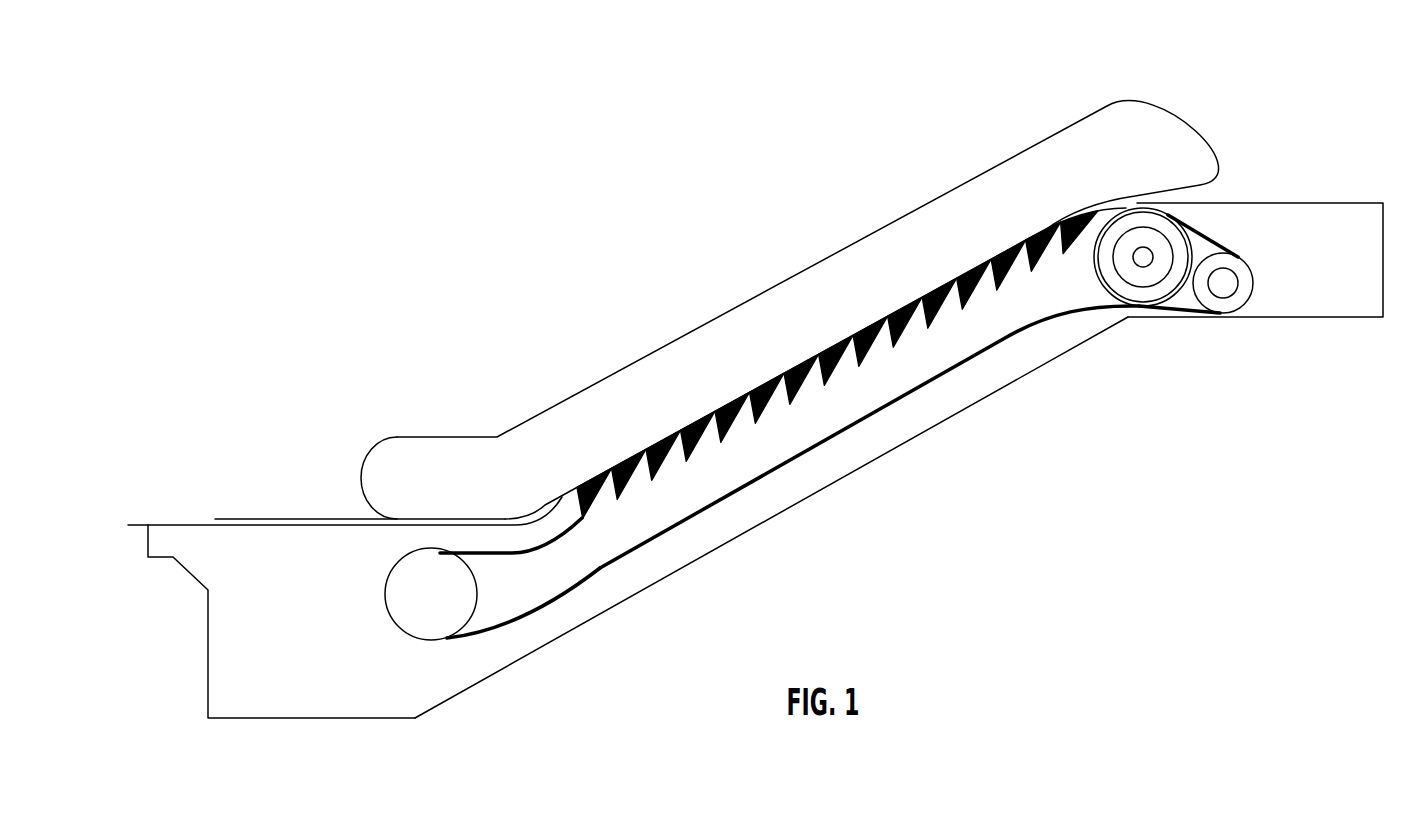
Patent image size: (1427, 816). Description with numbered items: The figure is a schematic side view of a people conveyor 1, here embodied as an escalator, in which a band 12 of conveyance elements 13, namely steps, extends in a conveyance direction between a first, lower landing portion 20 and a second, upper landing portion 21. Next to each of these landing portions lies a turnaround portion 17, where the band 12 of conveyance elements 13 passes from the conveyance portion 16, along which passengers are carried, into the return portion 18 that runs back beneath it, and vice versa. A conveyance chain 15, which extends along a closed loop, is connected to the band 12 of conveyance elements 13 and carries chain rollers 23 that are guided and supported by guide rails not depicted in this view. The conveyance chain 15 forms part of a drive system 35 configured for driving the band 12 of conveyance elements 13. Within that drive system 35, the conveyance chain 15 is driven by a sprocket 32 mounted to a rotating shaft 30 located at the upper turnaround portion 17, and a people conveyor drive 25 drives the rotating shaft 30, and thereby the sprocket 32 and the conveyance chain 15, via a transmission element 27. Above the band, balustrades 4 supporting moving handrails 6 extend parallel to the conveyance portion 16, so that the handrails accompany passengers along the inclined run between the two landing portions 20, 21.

The people conveyor 1 is at (565, 165).
The balustrade 4 is at (450, 467).
The moving handrail 6 is at (627, 367).
The band of conveyance elements 12 is at (697, 482).
The conveyance element 13 is at (597, 490).
The conveyance chain 15 is at (466, 642).
The conveyance portion 16 is at (888, 298).
The turnaround portion 17 is at (368, 633).
The return portion 18 is at (613, 580).
The first landing portion 20 is at (330, 487).
The second landing portion 21 is at (1318, 92).
The chain roller 23 is at (620, 502).
The people conveyor drive 25 is at (1268, 276).
The transmission element 27 is at (1237, 222).
The rotating shaft 30 is at (1143, 262).
The sprocket 32 is at (1078, 265).
The drive system 35 is at (511, 573).